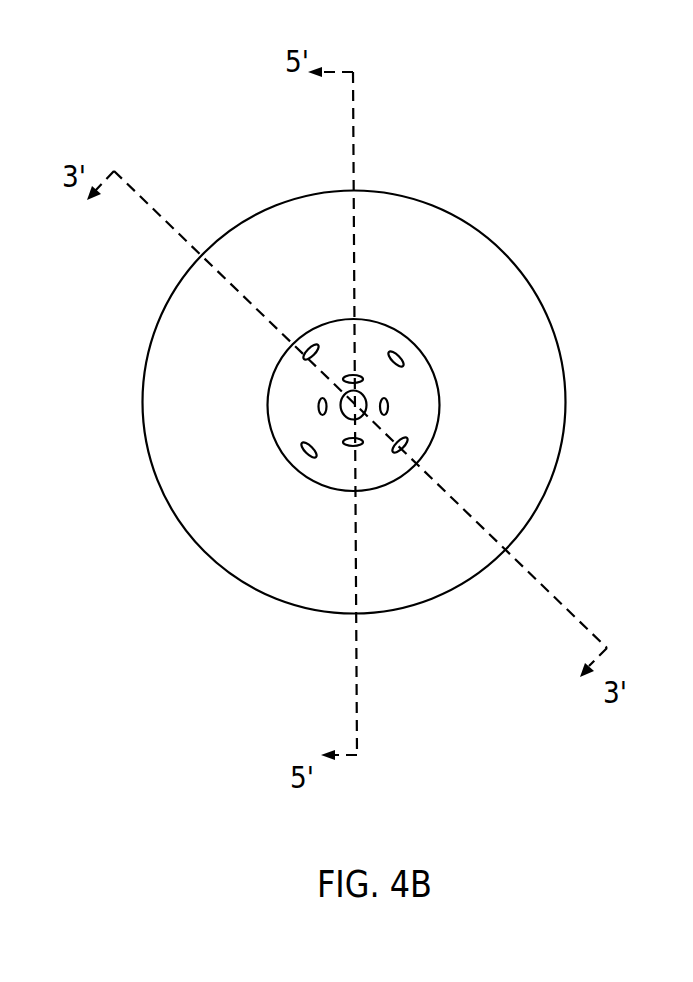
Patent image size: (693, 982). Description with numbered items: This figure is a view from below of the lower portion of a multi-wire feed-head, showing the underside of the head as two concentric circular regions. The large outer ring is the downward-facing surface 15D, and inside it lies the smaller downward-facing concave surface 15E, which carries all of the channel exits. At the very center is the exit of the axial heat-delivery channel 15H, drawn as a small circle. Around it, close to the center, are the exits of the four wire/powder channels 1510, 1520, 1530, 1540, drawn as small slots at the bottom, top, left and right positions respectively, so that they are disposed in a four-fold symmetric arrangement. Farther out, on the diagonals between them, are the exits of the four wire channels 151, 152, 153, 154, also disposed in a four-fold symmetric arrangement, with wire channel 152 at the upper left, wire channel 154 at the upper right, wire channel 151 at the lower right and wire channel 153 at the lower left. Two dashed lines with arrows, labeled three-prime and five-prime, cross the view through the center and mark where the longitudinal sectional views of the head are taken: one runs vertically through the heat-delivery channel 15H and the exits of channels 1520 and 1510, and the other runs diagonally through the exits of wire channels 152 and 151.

The downward-facing surface 15D is at (252, 323).
The downward-facing concave surface 15E is at (407, 388).
The axial heat-delivery channel 15H is at (342, 399).
The wire/powder channel 1520 is at (356, 375).
The wire/powder channel 1510 is at (353, 446).
The wire/powder channel 1530 is at (319, 409).
The wire/powder channel 1540 is at (388, 407).
The wire channel 152 is at (310, 353).
The wire channel 154 is at (398, 358).
The wire channel 151 is at (401, 446).
The wire channel 153 is at (308, 452).